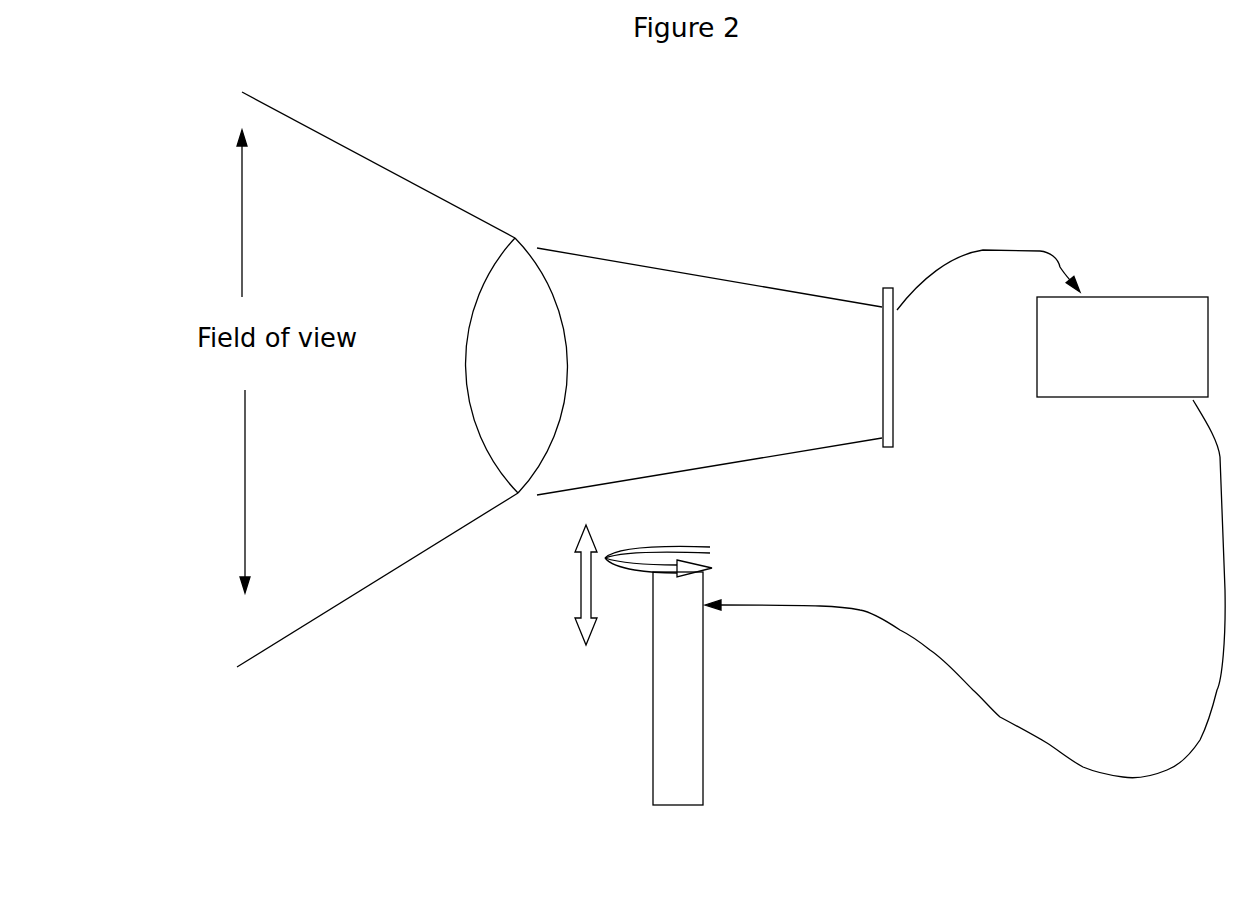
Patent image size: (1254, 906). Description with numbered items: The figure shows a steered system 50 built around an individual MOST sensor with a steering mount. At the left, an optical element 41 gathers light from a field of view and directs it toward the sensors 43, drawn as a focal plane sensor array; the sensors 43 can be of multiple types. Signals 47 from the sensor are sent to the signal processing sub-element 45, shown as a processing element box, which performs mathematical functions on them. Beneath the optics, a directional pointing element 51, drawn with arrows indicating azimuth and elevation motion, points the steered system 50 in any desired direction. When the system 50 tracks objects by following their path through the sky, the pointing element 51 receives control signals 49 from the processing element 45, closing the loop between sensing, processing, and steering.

The optical element 41 is at (507, 528).
The sensors 43 is at (873, 458).
The signal processing sub-element 45 is at (1140, 408).
The signals from the sensor 47 is at (980, 237).
The control signals 49 is at (1107, 702).
The system 50 is at (638, 127).
The directional pointing element 51 is at (733, 645).